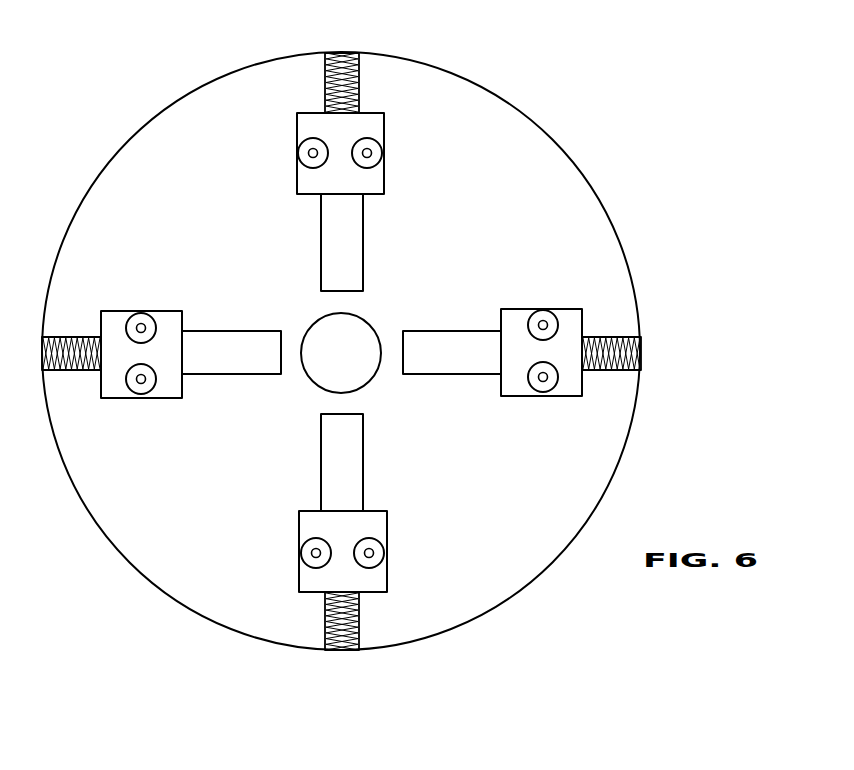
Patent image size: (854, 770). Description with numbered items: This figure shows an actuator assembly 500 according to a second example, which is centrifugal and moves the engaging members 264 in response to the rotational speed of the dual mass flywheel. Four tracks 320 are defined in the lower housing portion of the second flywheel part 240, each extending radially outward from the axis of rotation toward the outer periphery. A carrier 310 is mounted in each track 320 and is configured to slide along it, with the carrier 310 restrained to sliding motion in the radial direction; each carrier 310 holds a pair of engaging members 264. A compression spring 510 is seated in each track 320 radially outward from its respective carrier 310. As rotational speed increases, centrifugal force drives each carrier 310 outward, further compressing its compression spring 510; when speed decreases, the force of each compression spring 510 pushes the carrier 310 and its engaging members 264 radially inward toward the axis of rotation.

The actuator assembly 500 is at (258, 86).
The second flywheel part 240 is at (558, 92).
The carrier 310 is at (384, 178).
The track 320 is at (333, 247).
The engaging members 264 is at (367, 153).
The compression spring 510 is at (358, 80).